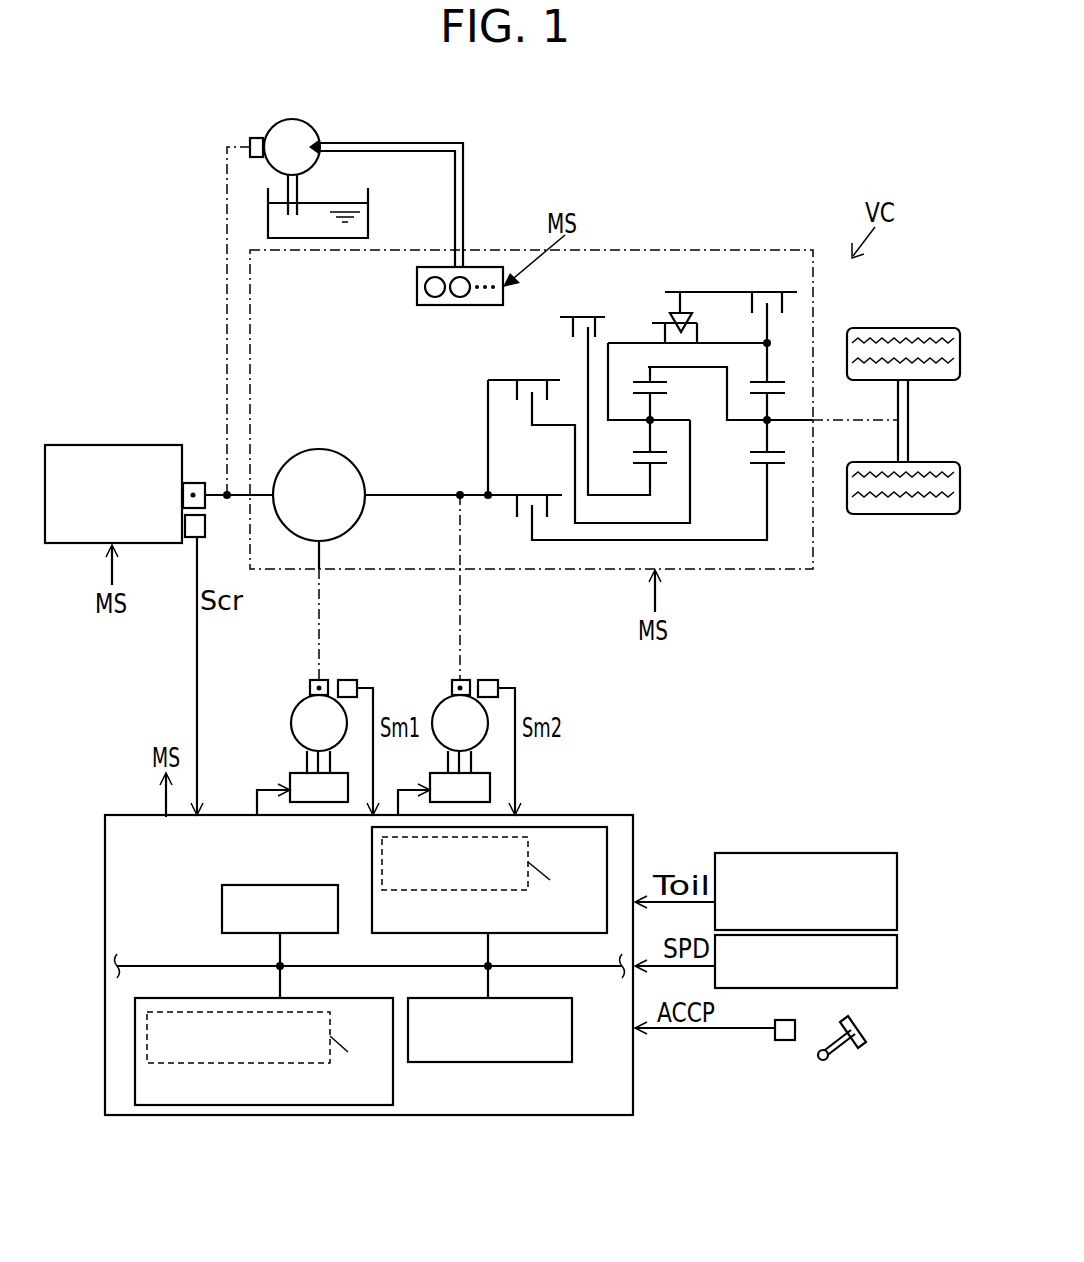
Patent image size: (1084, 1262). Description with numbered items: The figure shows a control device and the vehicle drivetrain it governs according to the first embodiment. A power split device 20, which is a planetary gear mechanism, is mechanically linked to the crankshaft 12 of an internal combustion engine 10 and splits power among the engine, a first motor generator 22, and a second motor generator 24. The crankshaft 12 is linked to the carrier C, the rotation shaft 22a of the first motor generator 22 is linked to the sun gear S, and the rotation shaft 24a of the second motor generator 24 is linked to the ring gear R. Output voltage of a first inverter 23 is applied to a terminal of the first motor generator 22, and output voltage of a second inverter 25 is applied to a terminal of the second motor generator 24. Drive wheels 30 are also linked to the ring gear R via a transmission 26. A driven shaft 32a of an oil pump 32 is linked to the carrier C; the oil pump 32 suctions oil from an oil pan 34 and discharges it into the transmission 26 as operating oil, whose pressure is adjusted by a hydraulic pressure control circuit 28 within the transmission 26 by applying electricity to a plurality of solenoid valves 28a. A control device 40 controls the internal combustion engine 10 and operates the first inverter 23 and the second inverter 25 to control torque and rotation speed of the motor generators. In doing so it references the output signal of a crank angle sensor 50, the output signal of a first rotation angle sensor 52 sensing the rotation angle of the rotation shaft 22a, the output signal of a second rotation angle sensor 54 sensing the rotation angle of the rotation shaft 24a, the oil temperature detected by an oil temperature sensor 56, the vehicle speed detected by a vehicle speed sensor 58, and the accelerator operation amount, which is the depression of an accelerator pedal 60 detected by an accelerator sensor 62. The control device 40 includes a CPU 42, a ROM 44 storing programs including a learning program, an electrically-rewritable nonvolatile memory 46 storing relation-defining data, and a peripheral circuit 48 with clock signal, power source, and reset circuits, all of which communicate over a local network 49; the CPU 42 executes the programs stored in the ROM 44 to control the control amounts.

The internal combustion engine 10 is at (112, 445).
The crankshaft 12 is at (193, 483).
The power split device 20 is at (357, 465).
The first motor generator 22 is at (291, 722).
The rotation shaft 22a is at (310, 688).
The first inverter 23 is at (350, 788).
The second motor generator 24 is at (436, 710).
The rotation shaft 24a is at (455, 681).
The second inverter 25 is at (492, 788).
The transmission 26 is at (760, 233).
The hydraulic pressure control circuit 28 is at (462, 277).
The solenoid valves 28a is at (439, 298).
The drive wheels 30 is at (902, 327).
The oil pump 32 is at (291, 117).
The driven shaft 32a is at (258, 138).
The oil pan 34 is at (368, 222).
The control device 40 is at (625, 816).
The central processing unit (CPU) 42 is at (301, 885).
The read-only memory (ROM) 44 is at (612, 852).
The memory 46 is at (327, 1000).
The peripheral circuit 48 is at (512, 998).
The local network 49 is at (531, 966).
The crank angle sensor 50 is at (193, 539).
The first rotation angle sensor 52 is at (348, 680).
The second rotation angle sensor 54 is at (491, 680).
The oil temperature sensor 56 is at (898, 899).
The vehicle speed sensor 58 is at (898, 960).
The accelerator pedal 60 is at (863, 1024).
The accelerator sensor 62 is at (793, 1022).